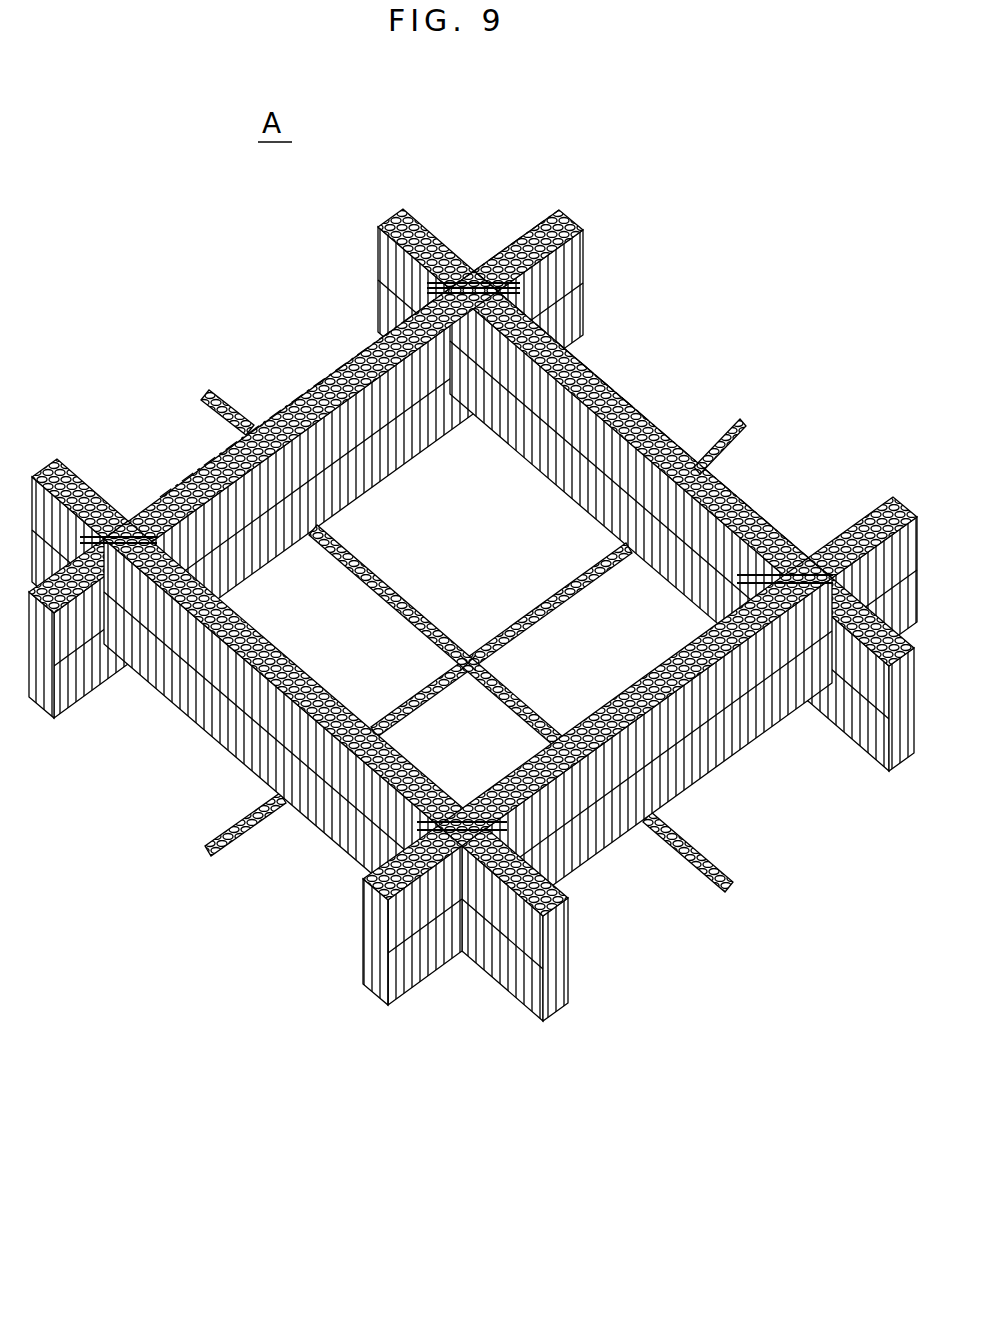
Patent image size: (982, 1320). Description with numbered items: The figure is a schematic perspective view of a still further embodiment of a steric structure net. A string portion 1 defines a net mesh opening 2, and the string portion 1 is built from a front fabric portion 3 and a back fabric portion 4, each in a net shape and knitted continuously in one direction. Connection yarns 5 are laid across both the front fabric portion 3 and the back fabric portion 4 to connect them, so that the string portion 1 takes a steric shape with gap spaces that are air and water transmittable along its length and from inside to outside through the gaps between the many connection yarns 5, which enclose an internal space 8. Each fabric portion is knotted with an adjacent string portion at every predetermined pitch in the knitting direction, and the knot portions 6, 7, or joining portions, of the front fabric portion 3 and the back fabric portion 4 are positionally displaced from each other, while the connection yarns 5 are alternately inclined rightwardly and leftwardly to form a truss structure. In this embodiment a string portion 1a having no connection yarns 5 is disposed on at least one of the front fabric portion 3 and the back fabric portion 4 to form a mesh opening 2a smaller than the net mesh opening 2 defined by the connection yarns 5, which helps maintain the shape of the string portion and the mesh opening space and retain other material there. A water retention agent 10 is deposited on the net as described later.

The string portion 1 is at (343, 940).
The string portion not having connection yarns 1a is at (382, 590).
The net mesh opening 2 is at (643, 403).
The mesh opening 2a is at (333, 357).
The front fabric portion 3 is at (610, 367).
The back fabric portion 4 is at (345, 1000).
The connection yarns 5 is at (693, 730).
The knot portion 6 is at (472, 280).
The knot portion 7 is at (473, 640).
The internal space 8 is at (347, 947).
The water retention agent 10 is at (307, 377).